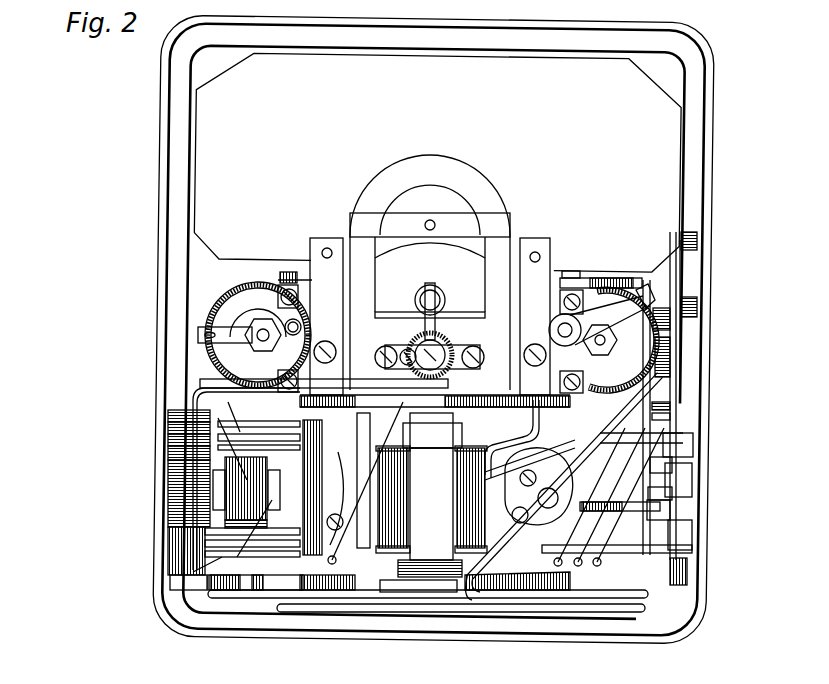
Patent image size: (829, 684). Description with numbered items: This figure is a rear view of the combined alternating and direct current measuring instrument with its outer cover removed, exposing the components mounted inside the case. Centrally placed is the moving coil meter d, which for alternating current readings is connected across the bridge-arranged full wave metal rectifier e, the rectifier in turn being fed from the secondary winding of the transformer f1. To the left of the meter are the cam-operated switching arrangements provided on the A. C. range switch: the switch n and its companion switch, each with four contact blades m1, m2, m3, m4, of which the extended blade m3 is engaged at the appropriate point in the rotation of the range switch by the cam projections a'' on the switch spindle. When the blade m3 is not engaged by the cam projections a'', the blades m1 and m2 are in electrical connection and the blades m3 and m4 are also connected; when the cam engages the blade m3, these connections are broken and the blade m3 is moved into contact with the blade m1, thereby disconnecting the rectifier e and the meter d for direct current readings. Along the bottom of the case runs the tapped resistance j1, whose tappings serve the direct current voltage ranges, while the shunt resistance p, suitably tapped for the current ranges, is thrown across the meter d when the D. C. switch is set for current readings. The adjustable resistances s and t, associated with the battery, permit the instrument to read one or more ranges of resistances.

The adjustable resistance s is at (240, 283).
The moving coil meter d is at (462, 263).
The adjustable resistance t is at (605, 275).
The shunt resistance p is at (655, 435).
The contact blade m1 is at (170, 412).
The contact blade m2 is at (168, 421).
The contact blade m3 is at (168, 436).
The contact blade m4 is at (168, 448).
The full wave metal rectifier e is at (227, 493).
The switch n is at (168, 538).
The cam projections a'' is at (432, 444).
The transformer f1 is at (431, 519).
The resistance j1 is at (328, 583).